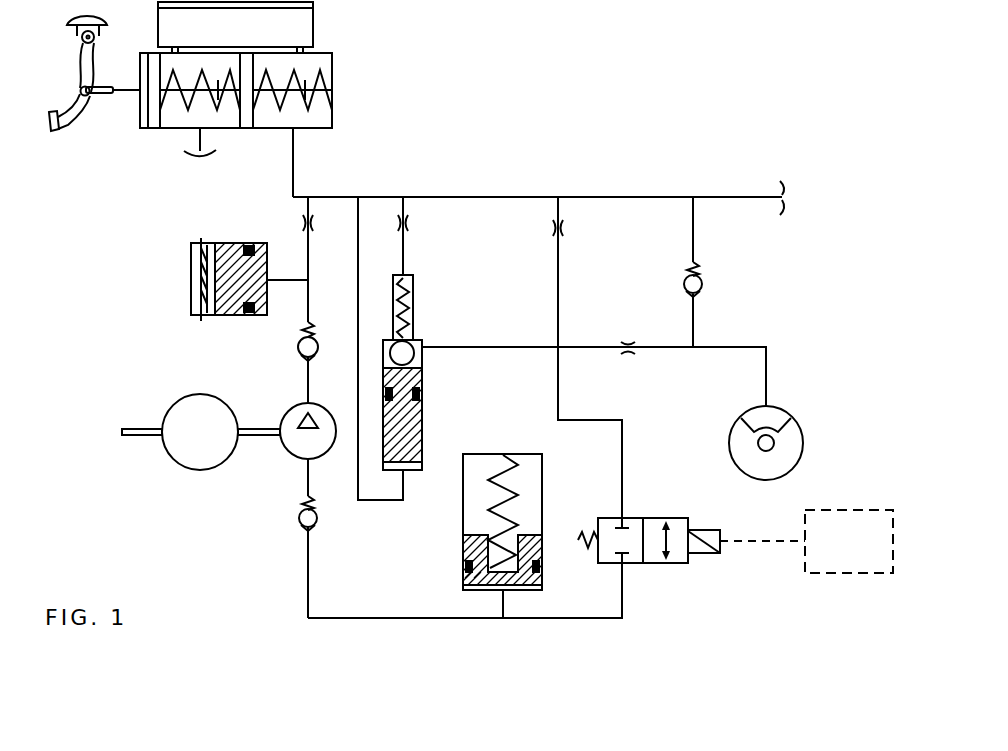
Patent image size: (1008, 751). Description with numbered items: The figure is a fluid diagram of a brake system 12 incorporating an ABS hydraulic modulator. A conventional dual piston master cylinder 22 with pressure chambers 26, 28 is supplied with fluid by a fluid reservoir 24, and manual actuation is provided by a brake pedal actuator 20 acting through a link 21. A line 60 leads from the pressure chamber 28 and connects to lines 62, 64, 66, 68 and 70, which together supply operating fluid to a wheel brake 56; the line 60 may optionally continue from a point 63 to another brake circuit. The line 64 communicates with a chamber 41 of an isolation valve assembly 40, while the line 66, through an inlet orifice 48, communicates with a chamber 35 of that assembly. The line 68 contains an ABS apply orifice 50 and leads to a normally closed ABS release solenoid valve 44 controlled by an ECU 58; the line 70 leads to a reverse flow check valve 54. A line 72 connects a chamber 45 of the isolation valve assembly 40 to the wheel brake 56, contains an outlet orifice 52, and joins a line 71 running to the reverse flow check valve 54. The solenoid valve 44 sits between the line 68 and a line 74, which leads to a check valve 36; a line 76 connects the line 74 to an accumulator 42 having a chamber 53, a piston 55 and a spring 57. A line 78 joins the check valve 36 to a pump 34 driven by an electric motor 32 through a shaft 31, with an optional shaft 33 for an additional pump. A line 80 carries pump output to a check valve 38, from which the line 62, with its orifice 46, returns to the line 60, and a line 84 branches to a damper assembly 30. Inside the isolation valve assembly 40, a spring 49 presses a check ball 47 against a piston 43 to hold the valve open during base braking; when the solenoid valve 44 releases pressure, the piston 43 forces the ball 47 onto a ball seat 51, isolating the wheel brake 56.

The brake system 12 is at (140, 328).
The brake pedal actuator 20 is at (58, 131).
The link 21 is at (128, 96).
The dual piston master cylinder 22 is at (342, 68).
The fluid reservoir 24 is at (298, 18).
The pressure chamber 26 is at (192, 118).
The pressure chamber 28 is at (330, 118).
The damper assembly 30 is at (191, 285).
The shaft 31 is at (250, 428).
The electric motor 32 is at (193, 470).
The shaft 33 is at (140, 436).
The pump 34 is at (296, 455).
The chamber 35 is at (449, 357).
The check valve 36 is at (300, 530).
The check valve 38 is at (302, 339).
The isolation valve assembly 40 is at (432, 415).
The chamber 41 is at (410, 472).
The accumulator 42 is at (496, 534).
The piston 43 is at (410, 440).
The ABS release solenoid valve 44 is at (653, 563).
The chamber 45 is at (389, 340).
The orifice 46 is at (315, 226).
The check ball 47 is at (409, 362).
The inlet orifice 48 is at (416, 223).
The spring 49 is at (408, 298).
The ABS apply orifice 50 is at (568, 228).
The ball seat 51 is at (415, 336).
The outlet orifice 52 is at (628, 341).
The chamber 53 is at (535, 588).
The reverse flow check valve 54 is at (703, 283).
The piston 55 is at (465, 548).
The wheel brake 56 is at (778, 416).
The spring 57 is at (503, 503).
The ECU 58 is at (835, 510).
The line 60 is at (296, 166).
The line 62 is at (302, 216).
The point 63 is at (787, 197).
The line 64 is at (372, 197).
The line 66 is at (410, 197).
The line 68 is at (565, 197).
The line 70 is at (730, 272).
The line 71 is at (695, 338).
The line 72 is at (528, 346).
The line 74 is at (548, 618).
The line 76 is at (508, 612).
The line 78 is at (304, 480).
The line 80 is at (306, 378).
The line 84 is at (290, 280).